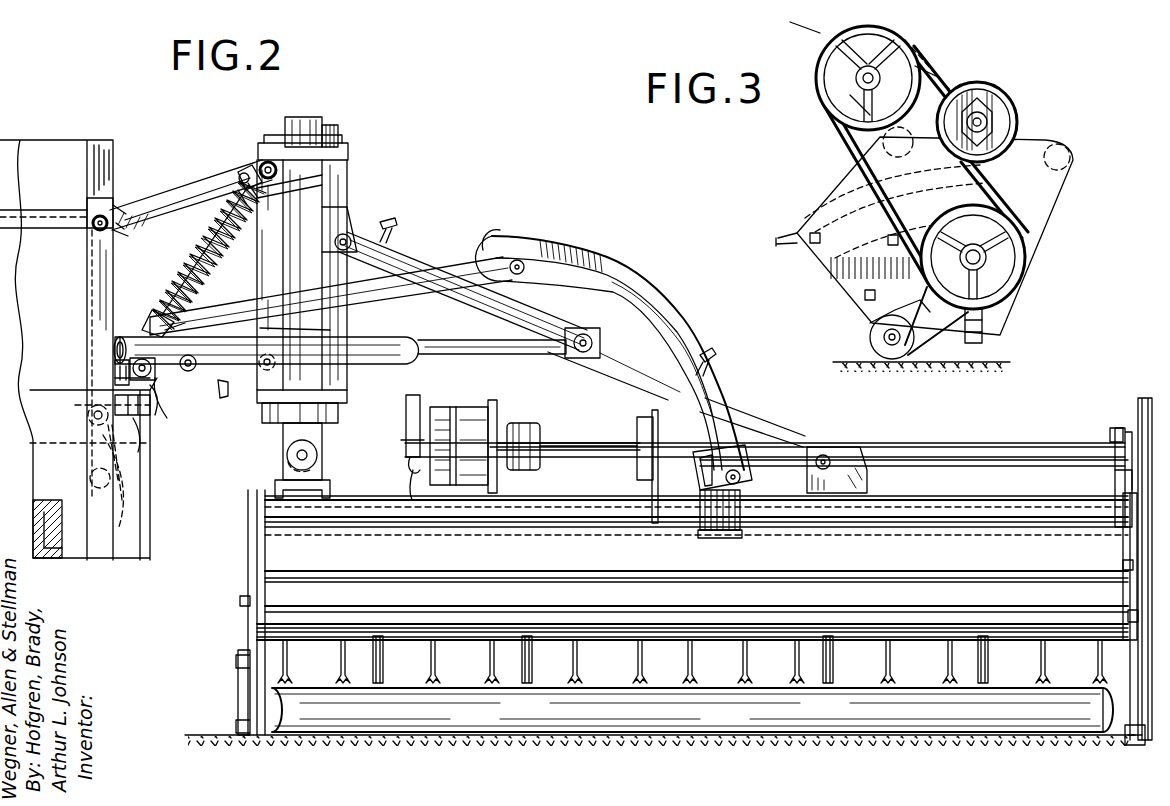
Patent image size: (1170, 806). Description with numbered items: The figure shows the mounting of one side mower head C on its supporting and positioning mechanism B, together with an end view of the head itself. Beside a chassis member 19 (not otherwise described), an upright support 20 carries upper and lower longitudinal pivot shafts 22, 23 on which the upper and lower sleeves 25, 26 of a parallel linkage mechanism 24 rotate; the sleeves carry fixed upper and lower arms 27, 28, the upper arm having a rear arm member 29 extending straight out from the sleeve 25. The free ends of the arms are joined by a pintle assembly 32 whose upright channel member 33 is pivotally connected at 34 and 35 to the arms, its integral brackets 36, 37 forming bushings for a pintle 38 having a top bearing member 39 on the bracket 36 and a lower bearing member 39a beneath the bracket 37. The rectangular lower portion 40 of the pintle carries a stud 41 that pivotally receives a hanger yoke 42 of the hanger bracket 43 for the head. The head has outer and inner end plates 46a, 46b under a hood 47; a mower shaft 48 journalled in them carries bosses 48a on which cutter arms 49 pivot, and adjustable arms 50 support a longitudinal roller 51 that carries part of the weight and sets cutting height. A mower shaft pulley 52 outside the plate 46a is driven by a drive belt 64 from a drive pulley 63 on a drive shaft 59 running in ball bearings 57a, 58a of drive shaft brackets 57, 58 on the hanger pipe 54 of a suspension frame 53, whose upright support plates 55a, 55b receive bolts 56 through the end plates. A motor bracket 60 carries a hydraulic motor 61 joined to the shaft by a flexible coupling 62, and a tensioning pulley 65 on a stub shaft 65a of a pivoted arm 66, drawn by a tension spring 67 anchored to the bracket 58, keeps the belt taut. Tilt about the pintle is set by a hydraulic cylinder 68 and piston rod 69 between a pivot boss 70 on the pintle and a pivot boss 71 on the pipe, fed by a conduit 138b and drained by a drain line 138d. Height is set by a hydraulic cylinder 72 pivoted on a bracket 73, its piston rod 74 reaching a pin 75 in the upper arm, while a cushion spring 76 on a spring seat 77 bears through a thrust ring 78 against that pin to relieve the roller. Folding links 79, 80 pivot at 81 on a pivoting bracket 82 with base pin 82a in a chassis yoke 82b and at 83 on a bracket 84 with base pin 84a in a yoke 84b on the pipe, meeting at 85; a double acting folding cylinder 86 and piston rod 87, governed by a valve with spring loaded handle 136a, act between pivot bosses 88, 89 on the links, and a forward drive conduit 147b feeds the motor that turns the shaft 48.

In FIG. 2, the drawbar 19 is at (28, 210).
In FIG. 2, the upright support 20 is at (100, 284).
In FIG. 2, the upper longitudinal pivot shaft 22 is at (93, 218).
In FIG. 2, the lower longitudinal pivot shaft 23 is at (98, 420).
In FIG. 2, the parallel linkage mechanism 24 is at (205, 146).
In FIG. 2, the upper sleeve 25 is at (95, 235).
In FIG. 2, the lower sleeve 26 is at (88, 412).
In FIG. 2, the upper arm 27 is at (176, 200).
In FIG. 2, the lower arm 28 is at (157, 394).
In FIG. 2, the rear arm member 29 is at (155, 197).
In FIG. 2, the pintle assembly 32 is at (379, 141).
In FIG. 2, the upright channel member 33 is at (262, 268).
In FIG. 2, the pivotal connection 34 is at (260, 166).
In FIG. 2, the pivotal connection 35 is at (300, 330).
In FIG. 2, the bracket 36 is at (350, 178).
In FIG. 2, the bracket 37 is at (345, 392).
In FIG. 2, the pintle 38 is at (300, 115).
In FIG. 2, the top bearing member 39 is at (330, 128).
In FIG. 2, the lower bearing member 39a is at (335, 416).
In FIG. 2, the lower portion of pintle 40 is at (320, 440).
In FIG. 2, the stud 41 is at (318, 452).
In FIG. 2, the hanger yoke 42 is at (322, 468).
In FIG. 2, the hanger bracket 43 is at (330, 490).
In FIG. 2, the outer end plate 46a is at (1125, 550).
In FIG. 3, the outer end plate 46a is at (1045, 218).
In FIG. 2, the inner end plate 46b is at (248, 637).
In FIG. 2, the hood 47 is at (838, 560).
In FIG. 2, the mower shaft 48 is at (418, 636).
In FIG. 3, the mower shaft 48 is at (985, 270).
In FIG. 2, the radially extending bosses 48a is at (533, 648).
In FIG. 2, the cutter arms 49 is at (338, 656).
In FIG. 3, the cutter arms 49 is at (985, 325).
In FIG. 2, the adjustable arms 50 is at (238, 694).
In FIG. 3, the adjustable arms 50 is at (915, 330).
In FIG. 2, the longitudinal roller 51 is at (690, 706).
In FIG. 3, the longitudinal roller 51 is at (870, 334).
In FIG. 2, the mower shaft pulley 52 is at (1110, 690).
In FIG. 3, the mower shaft pulley 52 is at (1025, 262).
In FIG. 2, the suspension frame 53 is at (970, 492).
In FIG. 2, the hanger pipe 54 is at (1000, 500).
In FIG. 3, the hanger pipe 54 is at (835, 152).
In FIG. 2, the upright support plate 55a is at (1115, 478).
In FIG. 3, the upright support plate 55a is at (830, 176).
In FIG. 2, the upright support plate 55b is at (247, 505).
In FIG. 2, the bolts 56 is at (245, 600).
In FIG. 3, the bolts 56 is at (883, 237).
In FIG. 2, the drive shaft bracket 57 is at (636, 474).
In FIG. 2, the ball bearing 57a is at (636, 432).
In FIG. 2, the drive shaft bracket 58 is at (1118, 425).
In FIG. 3, the drive shaft bracket 58 is at (855, 100).
In FIG. 2, the ball bearing 58a is at (1112, 438).
In FIG. 2, the drive shaft 59 is at (885, 440).
In FIG. 3, the drive shaft 59 is at (845, 44).
In FIG. 2, the motor bracket 60 is at (508, 410).
In FIG. 2, the hydraulic motor 61 is at (470, 420).
In FIG. 2, the flexible coupling 62 is at (528, 424).
In FIG. 2, the drive pulley 63 is at (1140, 398).
In FIG. 3, the drive pulley 63 is at (825, 68).
In FIG. 2, the drive belt 64 is at (1150, 578).
In FIG. 3, the drive belt 64 is at (995, 195).
In FIG. 3, the tensioning pulley 65 is at (995, 83).
In FIG. 3, the stub shaft 65a is at (984, 114).
In FIG. 3, the pivotally mounted arm 66 is at (935, 75).
In FIG. 3, the tension spring 67 is at (953, 75).
In FIG. 2, the hydraulic cylinder 68 is at (416, 255).
In FIG. 2, the piston rod 69 is at (735, 416).
In FIG. 2, the pivot boss 70 is at (342, 232).
In FIG. 2, the pivot boss 71 is at (865, 470).
In FIG. 2, the hydraulic cylinder 72 is at (170, 300).
In FIG. 2, the bracket 73 is at (122, 512).
In FIG. 2, the piston rod 74 is at (200, 227).
In FIG. 2, the pin 75 is at (245, 176).
In FIG. 2, the cushion spring 76 is at (190, 252).
In FIG. 2, the spring seat 77 is at (160, 322).
In FIG. 2, the thrust ring 78 is at (290, 188).
In FIG. 2, the folding link 79 is at (478, 235).
In FIG. 2, the folding link 80 is at (690, 328).
In FIG. 2, the pivot 81 is at (112, 364).
In FIG. 2, the pivoting bracket 82 is at (152, 410).
In FIG. 2, the upright base pin 82a is at (150, 420).
In FIG. 2, the yoke 82b is at (140, 430).
In FIG. 2, the pivot 83 is at (748, 478).
In FIG. 2, the bracket 84 is at (700, 490).
In FIG. 2, the upright base pin 84a is at (745, 510).
In FIG. 2, the yoke 84b is at (745, 532).
In FIG. 2, the pivotal connection 85 is at (518, 262).
In FIG. 2, the hydraulic folding cylinder 86 is at (388, 334).
In FIG. 2, the piston rod 87 is at (448, 355).
In FIG. 2, the pivot boss 88 is at (250, 300).
In FIG. 2, the pivot boss 89 is at (592, 325).
In FIG. 2, the manual control handle 136a is at (223, 392).
In FIG. 2, the conduit 138b is at (720, 350).
In FIG. 2, the drain line 138d is at (388, 220).
In FIG. 2, the forward drive conduit 147b is at (455, 490).
In FIG. 2, the supporting and positioning mechanism B is at (161, 144).
In FIG. 2, the side mower head C is at (958, 430).
In FIG. 3, the side mower head C is at (1058, 97).